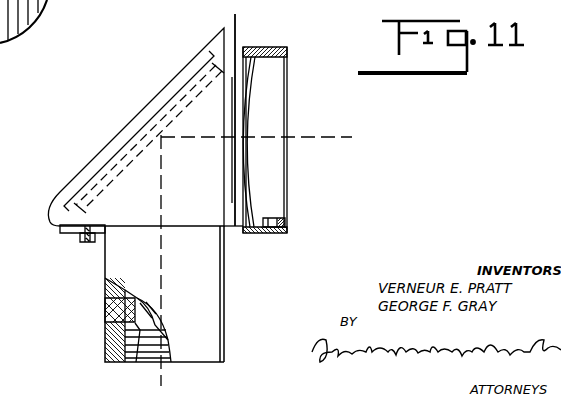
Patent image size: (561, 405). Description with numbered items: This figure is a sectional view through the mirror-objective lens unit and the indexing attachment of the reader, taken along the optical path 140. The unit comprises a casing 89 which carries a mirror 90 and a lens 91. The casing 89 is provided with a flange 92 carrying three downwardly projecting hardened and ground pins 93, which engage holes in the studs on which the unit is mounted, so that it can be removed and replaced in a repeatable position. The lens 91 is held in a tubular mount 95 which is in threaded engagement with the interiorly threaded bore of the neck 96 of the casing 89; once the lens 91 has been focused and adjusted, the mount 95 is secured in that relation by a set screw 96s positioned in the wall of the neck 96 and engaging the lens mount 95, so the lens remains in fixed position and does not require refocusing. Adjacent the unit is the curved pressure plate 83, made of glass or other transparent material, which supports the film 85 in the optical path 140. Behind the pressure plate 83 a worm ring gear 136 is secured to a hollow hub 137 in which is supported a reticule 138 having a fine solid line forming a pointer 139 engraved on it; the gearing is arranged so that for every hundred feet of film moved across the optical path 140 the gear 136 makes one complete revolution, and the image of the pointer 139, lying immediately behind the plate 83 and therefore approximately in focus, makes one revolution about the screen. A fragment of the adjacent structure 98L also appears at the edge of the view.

The left eyepiece 98L is at (49, 4).
The pressure plate 83 is at (238, 45).
The pointer 139 is at (267, 45).
The optical path 140 is at (353, 133).
The casing 89 is at (119, 130).
The mirror 90 is at (119, 170).
The film 85 is at (231, 165).
The reticule 138 is at (255, 207).
The hollow hub 137 is at (286, 219).
The worm ring gear 136 is at (286, 234).
The flange 92 is at (62, 228).
The pins 93 is at (78, 241).
The set screw 96s is at (108, 307).
The neck 96 is at (105, 338).
The lens 91 is at (141, 318).
The tubular mount 95 is at (136, 325).